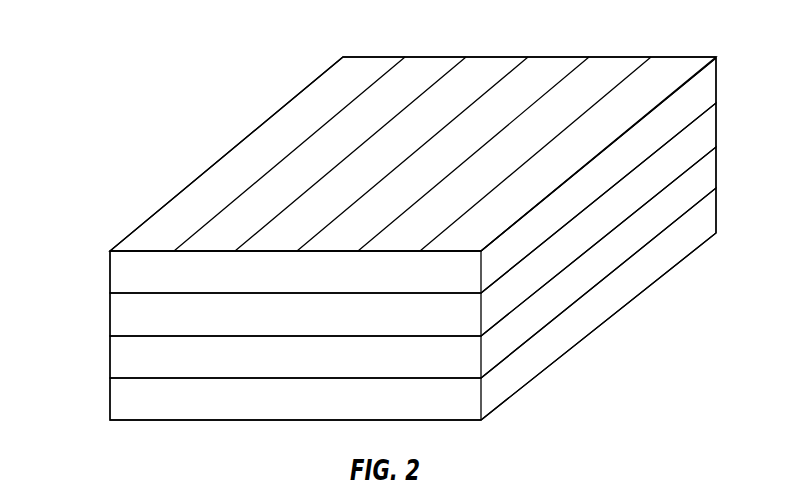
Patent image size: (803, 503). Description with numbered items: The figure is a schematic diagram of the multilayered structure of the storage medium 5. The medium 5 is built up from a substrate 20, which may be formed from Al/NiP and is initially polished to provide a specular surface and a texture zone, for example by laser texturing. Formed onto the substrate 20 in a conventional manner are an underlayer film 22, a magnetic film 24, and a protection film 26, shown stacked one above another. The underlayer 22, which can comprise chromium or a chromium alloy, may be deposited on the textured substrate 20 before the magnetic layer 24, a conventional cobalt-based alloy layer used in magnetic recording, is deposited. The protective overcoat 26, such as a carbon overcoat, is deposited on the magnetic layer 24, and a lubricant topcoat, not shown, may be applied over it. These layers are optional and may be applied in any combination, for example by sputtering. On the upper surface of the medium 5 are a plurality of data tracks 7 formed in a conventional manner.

The medium 5 is at (200, 158).
The data tracks 7 is at (517, 56).
The substrate 20 is at (110, 399).
The underlayer film 22 is at (110, 356).
The magnetic film 24 is at (110, 313).
The protection film 26 is at (110, 268).